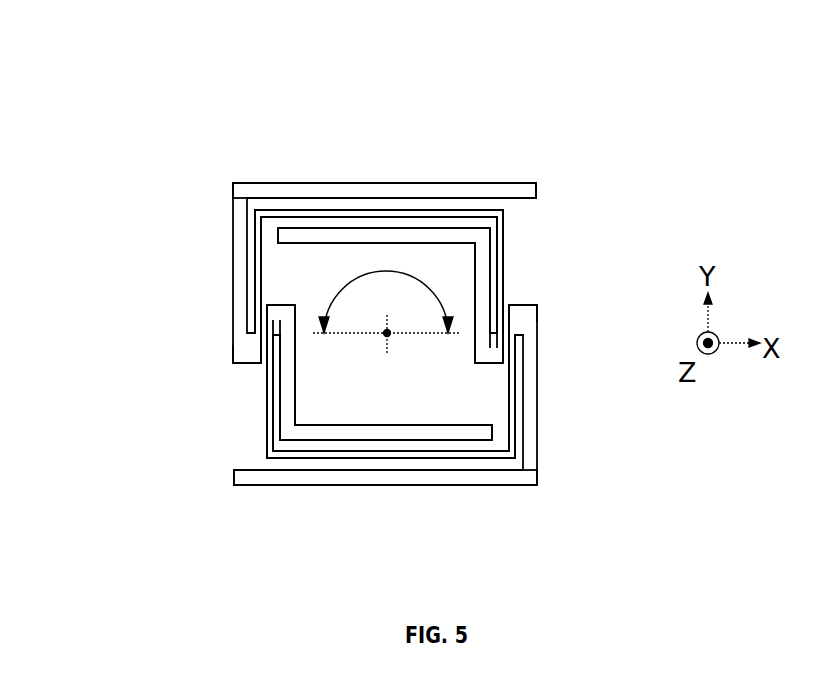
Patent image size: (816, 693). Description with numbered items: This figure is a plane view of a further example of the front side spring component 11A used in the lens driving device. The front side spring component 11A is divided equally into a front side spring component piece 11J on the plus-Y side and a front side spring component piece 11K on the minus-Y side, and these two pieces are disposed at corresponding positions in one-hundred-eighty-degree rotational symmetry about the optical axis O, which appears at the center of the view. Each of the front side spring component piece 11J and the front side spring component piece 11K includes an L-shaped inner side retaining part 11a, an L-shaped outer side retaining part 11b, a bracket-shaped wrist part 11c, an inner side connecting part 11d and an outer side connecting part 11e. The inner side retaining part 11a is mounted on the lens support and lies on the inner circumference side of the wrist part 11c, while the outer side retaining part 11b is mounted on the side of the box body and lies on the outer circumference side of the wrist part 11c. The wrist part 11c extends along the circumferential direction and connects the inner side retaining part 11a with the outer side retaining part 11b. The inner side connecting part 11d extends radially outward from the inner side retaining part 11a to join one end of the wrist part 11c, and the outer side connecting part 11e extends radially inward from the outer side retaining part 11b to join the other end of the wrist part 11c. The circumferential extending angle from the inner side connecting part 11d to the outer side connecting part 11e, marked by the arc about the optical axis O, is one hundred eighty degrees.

The front side spring component 11A is at (350, 299).
The front side spring component piece on the +Y side 11J is at (237, 248).
The front side spring component piece on the −Y side 11K is at (527, 430).
The L-shaped inner side retaining part 11a is at (287, 378).
The L-shaped outer side retaining part 11b is at (340, 187).
The ⊐-shaped wrist part 11c is at (270, 435).
The inner side connecting part 11d is at (275, 315).
The outer side connecting part 11e is at (255, 352).
The optical axis O is at (389, 335).